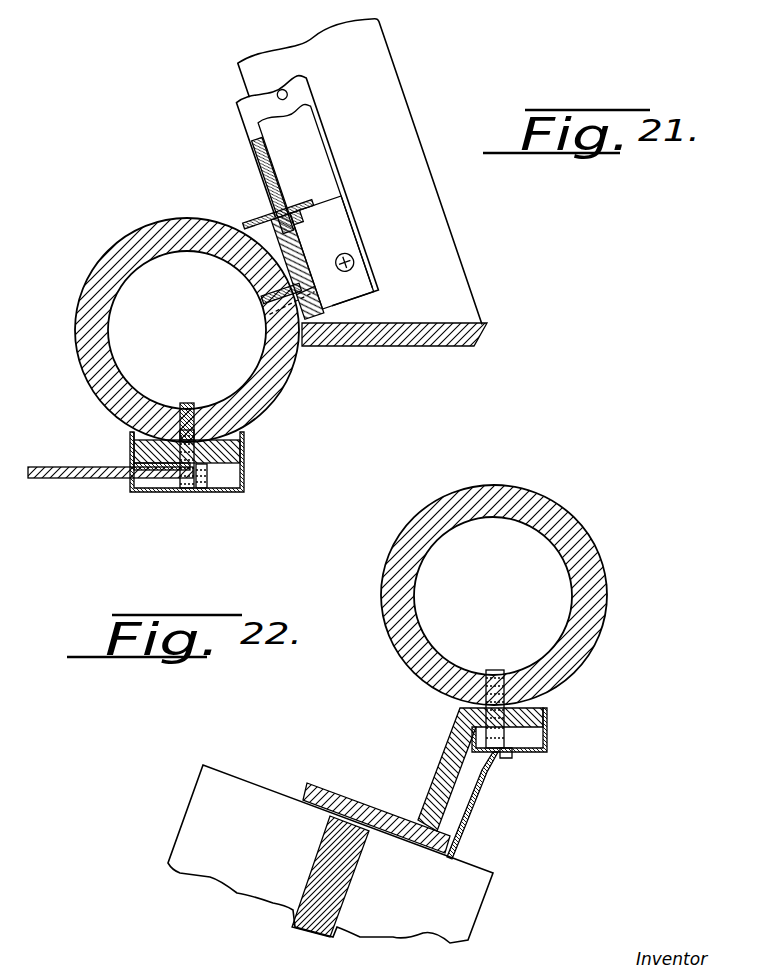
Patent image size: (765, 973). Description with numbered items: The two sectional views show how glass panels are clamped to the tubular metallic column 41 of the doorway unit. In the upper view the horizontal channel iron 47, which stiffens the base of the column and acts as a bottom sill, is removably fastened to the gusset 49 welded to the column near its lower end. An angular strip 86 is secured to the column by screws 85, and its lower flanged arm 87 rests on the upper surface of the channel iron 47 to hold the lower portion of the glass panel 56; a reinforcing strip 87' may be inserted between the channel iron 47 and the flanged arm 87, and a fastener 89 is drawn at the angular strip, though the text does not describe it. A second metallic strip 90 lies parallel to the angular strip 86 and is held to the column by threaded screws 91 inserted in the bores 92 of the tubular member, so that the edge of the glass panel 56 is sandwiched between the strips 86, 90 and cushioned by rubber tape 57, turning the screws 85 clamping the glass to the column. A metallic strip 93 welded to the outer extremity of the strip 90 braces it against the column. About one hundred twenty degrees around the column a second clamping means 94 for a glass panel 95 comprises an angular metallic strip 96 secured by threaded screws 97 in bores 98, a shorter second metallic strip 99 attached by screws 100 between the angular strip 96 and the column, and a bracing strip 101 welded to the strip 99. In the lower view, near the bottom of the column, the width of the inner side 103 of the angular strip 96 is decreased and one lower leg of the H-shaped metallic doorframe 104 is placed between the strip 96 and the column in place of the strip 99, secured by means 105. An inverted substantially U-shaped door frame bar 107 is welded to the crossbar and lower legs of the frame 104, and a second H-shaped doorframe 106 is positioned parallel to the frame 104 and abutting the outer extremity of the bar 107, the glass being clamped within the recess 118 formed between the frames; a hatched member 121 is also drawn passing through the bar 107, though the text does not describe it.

In FIG. 21, the tubular metallic column 41 is at (164, 234).
In FIG. 22, the tubular metallic column 41 is at (560, 523).
In FIG. 21, the horizontal channel iron 47 is at (461, 237).
In FIG. 21, the gusset 49 is at (414, 346).
In FIG. 21, the glass panel 56 is at (257, 161).
In FIG. 21, the rubber tape 57 is at (308, 218).
In FIG. 21, the screws 85 is at (338, 259).
In FIG. 21, the angular strip 86 is at (332, 278).
In FIG. 21, the flanged arm 87 is at (333, 184).
In FIG. 21, the reinforcing strip 87' is at (341, 184).
In FIG. 21, the screw 89 is at (356, 258).
In FIG. 21, the second metallic strip 90 is at (268, 259).
In FIG. 21, the threaded screws 91 is at (258, 307).
In FIG. 21, the bores 92 is at (266, 321).
In FIG. 21, the metallic strip 93 is at (244, 224).
In FIG. 21, the second clamping means 94 is at (252, 450).
In FIG. 21, the glass panel 95 is at (56, 467).
In FIG. 21, the angular metallic strip 96 is at (244, 492).
In FIG. 22, the angular metallic strip 96 is at (556, 704).
In FIG. 21, the threaded screws 97 is at (198, 493).
In FIG. 21, the bores 98 is at (202, 419).
In FIG. 21, the second metallic strip 99 is at (130, 441).
In FIG. 21, the screws 100 is at (182, 405).
In FIG. 21, the second metallic strip 101 is at (134, 457).
In FIG. 22, the inner side 103 is at (538, 755).
In FIG. 22, the H-shaped metallic doorframe 104 is at (440, 759).
In FIG. 22, the securing means 105 is at (497, 670).
In FIG. 22, the second H-shaped metallic doorframe 106 is at (456, 833).
In FIG. 22, the door frame bar 107 is at (312, 786).
In FIG. 22, the recess 118 is at (490, 907).
In FIG. 22, the pin 121 is at (346, 894).